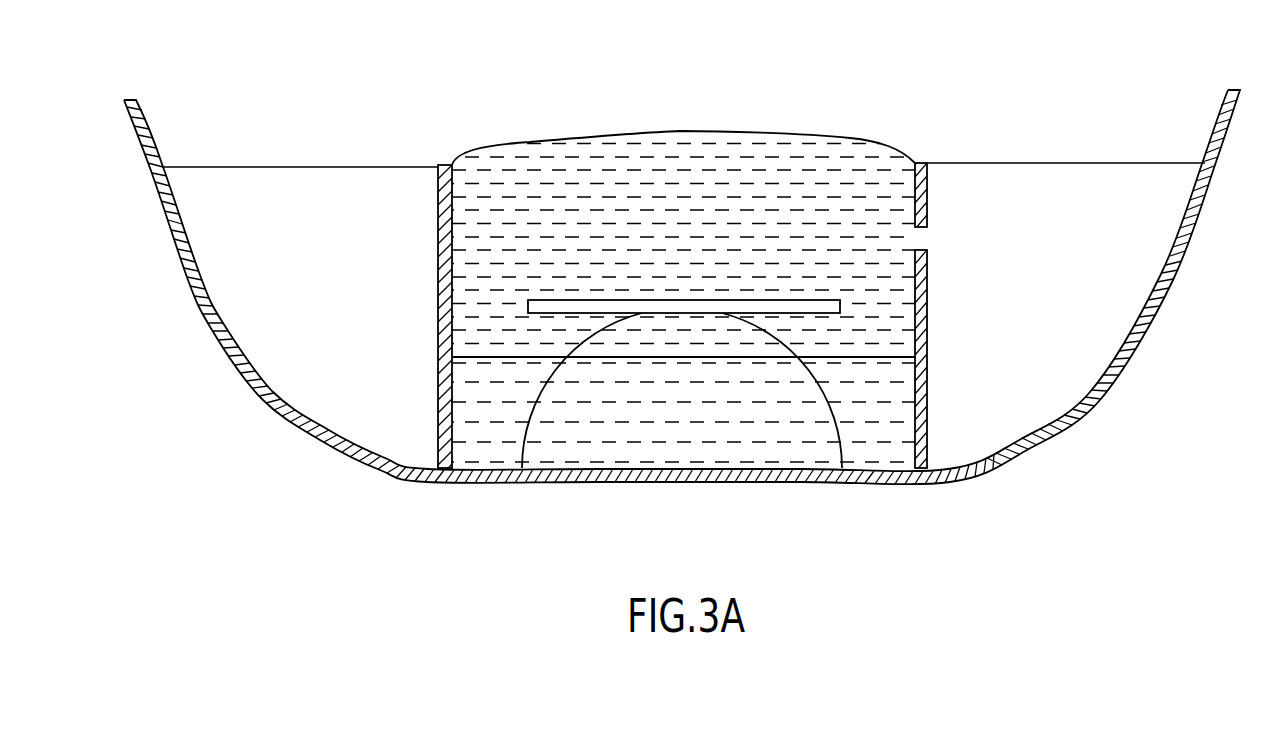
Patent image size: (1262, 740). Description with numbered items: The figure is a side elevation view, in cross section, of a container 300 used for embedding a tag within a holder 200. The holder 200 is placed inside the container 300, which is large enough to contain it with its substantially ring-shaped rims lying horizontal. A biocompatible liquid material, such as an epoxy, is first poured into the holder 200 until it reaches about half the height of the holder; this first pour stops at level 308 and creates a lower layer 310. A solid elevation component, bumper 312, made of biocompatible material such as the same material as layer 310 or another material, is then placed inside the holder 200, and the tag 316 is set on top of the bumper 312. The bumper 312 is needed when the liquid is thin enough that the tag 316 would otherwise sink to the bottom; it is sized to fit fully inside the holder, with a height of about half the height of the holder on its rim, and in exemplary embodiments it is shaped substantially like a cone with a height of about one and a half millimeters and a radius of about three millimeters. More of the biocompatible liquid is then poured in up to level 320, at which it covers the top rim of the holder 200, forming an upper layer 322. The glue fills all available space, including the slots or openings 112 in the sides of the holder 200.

The container 300 is at (1215, 130).
The holder 200 is at (447, 167).
The level 320 is at (688, 132).
The layer 322 is at (813, 165).
The slots or openings 112 is at (918, 238).
The tag 316 is at (845, 302).
The level 308 is at (883, 357).
The layer 310 is at (507, 432).
The bumper 312 is at (663, 413).